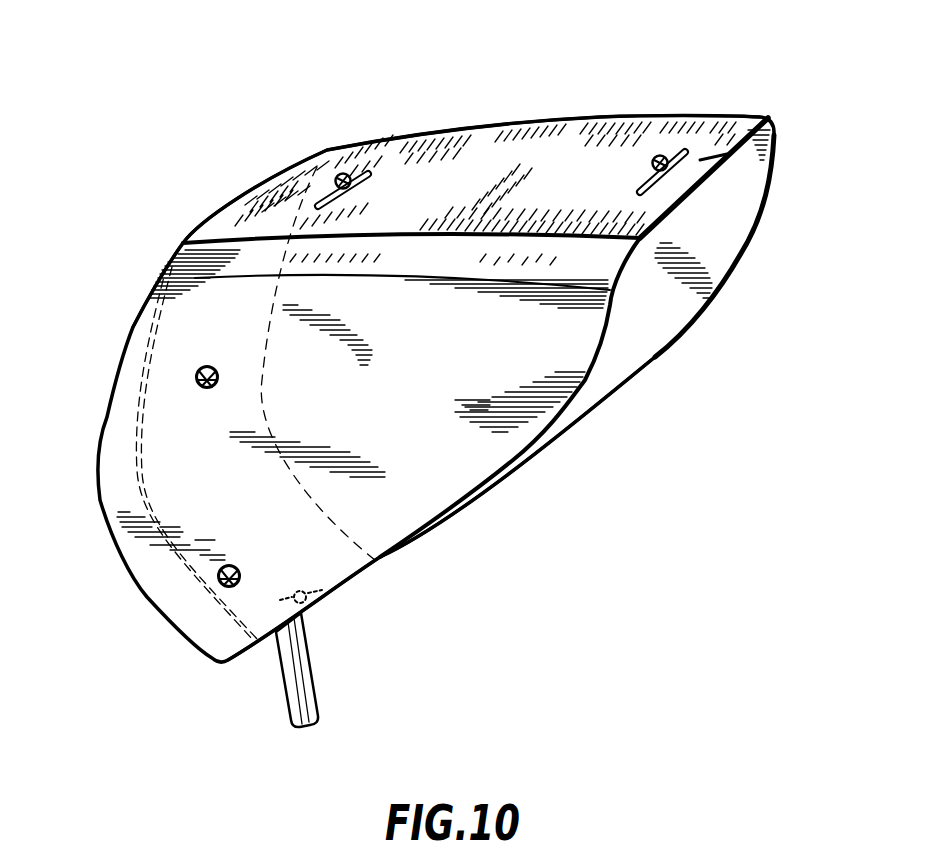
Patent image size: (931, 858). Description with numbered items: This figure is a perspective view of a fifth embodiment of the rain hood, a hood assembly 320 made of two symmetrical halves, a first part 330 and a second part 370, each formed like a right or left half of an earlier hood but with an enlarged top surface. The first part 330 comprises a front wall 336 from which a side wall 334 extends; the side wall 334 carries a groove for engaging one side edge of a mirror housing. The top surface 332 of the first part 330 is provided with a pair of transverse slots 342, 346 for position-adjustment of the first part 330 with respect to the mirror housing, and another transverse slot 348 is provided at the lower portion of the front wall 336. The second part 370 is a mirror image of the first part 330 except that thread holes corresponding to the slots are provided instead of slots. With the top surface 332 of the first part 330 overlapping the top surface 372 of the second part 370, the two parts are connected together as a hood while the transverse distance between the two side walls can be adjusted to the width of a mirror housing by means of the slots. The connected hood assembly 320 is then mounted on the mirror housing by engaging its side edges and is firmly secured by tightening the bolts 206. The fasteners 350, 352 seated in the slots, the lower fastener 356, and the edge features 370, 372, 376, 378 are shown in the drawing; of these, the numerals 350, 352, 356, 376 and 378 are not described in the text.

The hood assembly 320 is at (487, 89).
The first part 330 is at (574, 120).
The top surface 332 is at (534, 145).
The side wall 334 is at (747, 213).
The front wall 336 is at (238, 203).
The transverse slot 342 is at (681, 150).
The transverse slot 346 is at (358, 168).
The transverse slot 348 is at (330, 582).
The fastener 350 is at (660, 155).
The slot 352 is at (343, 172).
The mounting post 356 is at (318, 610).
The second part 370 is at (563, 412).
The top surface 372 is at (607, 268).
The bottom edge 376 is at (500, 455).
The front lip 378 is at (143, 290).
The bolt 206 is at (196, 380).